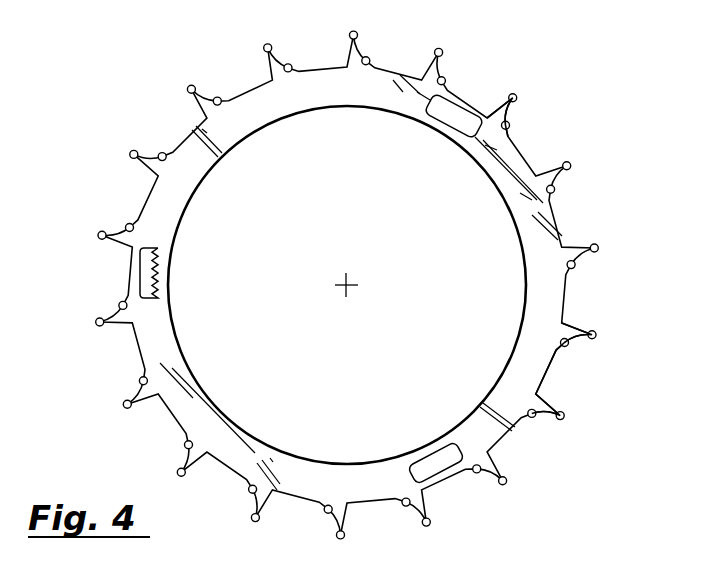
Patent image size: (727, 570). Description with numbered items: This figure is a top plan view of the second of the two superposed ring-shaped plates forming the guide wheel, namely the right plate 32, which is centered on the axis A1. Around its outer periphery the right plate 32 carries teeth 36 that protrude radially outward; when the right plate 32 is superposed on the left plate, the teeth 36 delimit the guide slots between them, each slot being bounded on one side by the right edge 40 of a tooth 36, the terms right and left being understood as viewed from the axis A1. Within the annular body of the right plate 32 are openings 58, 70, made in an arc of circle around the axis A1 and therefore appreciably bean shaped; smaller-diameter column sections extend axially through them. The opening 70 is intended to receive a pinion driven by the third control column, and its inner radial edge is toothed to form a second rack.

The right plate 32 is at (640, 243).
The tooth 36 is at (513, 115).
The right edge 40 is at (566, 342).
The opening 58 is at (458, 118).
The opening 70 is at (150, 264).
The axis A1 is at (347, 285).